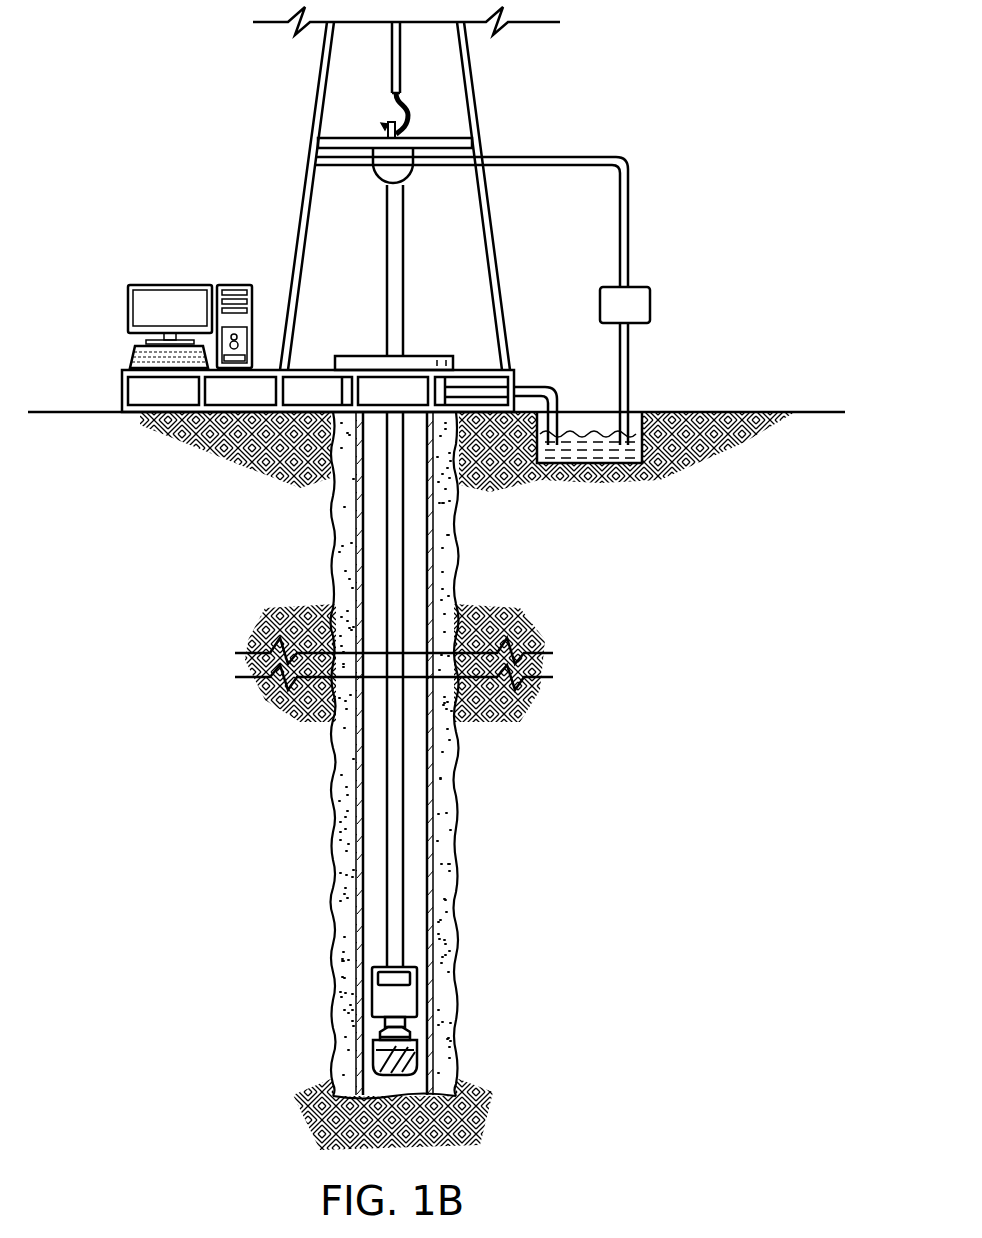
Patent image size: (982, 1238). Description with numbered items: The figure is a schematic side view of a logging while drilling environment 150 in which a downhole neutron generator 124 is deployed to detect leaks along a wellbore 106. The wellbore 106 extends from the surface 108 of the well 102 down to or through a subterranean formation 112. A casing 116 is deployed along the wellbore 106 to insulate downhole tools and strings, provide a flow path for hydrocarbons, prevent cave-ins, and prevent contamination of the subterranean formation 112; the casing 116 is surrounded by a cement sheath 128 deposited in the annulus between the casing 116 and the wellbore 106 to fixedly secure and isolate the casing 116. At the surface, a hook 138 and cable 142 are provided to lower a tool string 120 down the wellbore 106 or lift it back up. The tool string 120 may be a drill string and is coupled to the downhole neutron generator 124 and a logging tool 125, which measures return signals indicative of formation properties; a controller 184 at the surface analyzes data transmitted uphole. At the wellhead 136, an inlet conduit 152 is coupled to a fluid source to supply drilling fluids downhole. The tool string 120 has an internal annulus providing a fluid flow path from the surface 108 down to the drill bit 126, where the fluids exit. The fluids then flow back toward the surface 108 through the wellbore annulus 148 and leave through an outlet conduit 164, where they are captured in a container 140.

The well 102 is at (421, 345).
The wellbore 106 is at (452, 800).
The surface 108 is at (735, 412).
The subterranean formation 112 is at (581, 888).
The casing 116 is at (433, 560).
The tool string 120 is at (385, 898).
The downhole neutron generator 124 is at (383, 980).
The logging tool 125 is at (417, 992).
The drill bit 126 is at (417, 1063).
The cement sheath 128 is at (338, 826).
The wellhead 136 is at (360, 355).
The hook 138 is at (410, 120).
The container 140 is at (594, 464).
The cable 142 is at (390, 82).
The wellbore annulus 148 is at (373, 517).
The logging while drilling environment 150 is at (236, 171).
The inlet conduit 152 is at (572, 156).
The outlet conduit 164 is at (535, 387).
The controller 184 is at (127, 308).